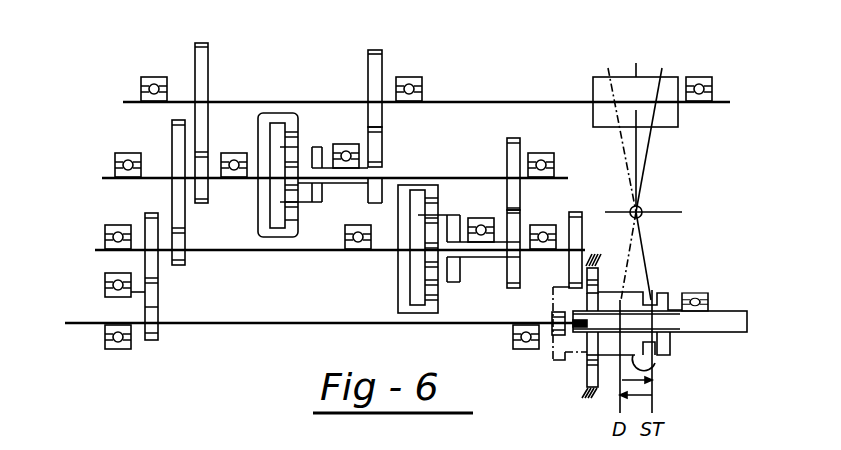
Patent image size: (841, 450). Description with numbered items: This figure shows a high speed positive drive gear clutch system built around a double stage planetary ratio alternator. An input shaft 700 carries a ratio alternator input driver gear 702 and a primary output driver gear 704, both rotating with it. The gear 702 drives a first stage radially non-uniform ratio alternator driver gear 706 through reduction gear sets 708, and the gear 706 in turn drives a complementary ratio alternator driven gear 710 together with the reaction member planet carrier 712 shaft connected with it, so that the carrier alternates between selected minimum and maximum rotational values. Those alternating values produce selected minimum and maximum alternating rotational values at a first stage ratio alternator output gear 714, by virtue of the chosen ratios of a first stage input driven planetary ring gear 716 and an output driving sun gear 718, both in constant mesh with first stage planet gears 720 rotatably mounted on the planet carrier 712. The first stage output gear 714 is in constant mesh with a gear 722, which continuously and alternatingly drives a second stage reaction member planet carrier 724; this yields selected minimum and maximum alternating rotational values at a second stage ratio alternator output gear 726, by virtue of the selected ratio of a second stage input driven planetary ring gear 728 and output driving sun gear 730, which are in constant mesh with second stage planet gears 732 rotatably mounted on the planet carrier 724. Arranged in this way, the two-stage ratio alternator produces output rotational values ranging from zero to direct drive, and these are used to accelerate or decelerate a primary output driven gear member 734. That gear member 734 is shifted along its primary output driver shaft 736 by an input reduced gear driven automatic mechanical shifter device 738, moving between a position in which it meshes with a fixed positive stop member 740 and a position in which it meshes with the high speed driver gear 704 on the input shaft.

The input shaft 700 is at (88, 325).
The ratio alternator input driver gear 702 is at (150, 340).
The primary output driver gear 704 is at (553, 337).
The first stage radially non-uniform ratio alternator driver gear 706 is at (382, 60).
The reduction gear sets 708 is at (226, 47).
The complementary ratio alternator driven gear 710 is at (385, 147).
The reaction member planet carrier 712 is at (303, 143).
The first stage ratio alternator output gear 714 is at (518, 145).
The first stage input driven planetary ring gear 716 is at (283, 112).
The output driving sun gear 718 is at (300, 170).
The first stage planet gears 720 is at (292, 215).
The gear 722 is at (523, 218).
The second stage reaction member planet carrier 724 is at (450, 215).
The second stage ratio alternator output gear 726 is at (582, 232).
The second stage input driven planetary ring gear 728 is at (422, 178).
The output driving sun gear 730 is at (430, 260).
The second stage planet gears 732 is at (430, 292).
The primary output driven gear member 734 is at (652, 366).
The primary output driver shaft 736 is at (722, 312).
The automatic mechanical shifter (A.M.S.) device 738 is at (653, 77).
The fixed positive stop member 740 is at (588, 378).